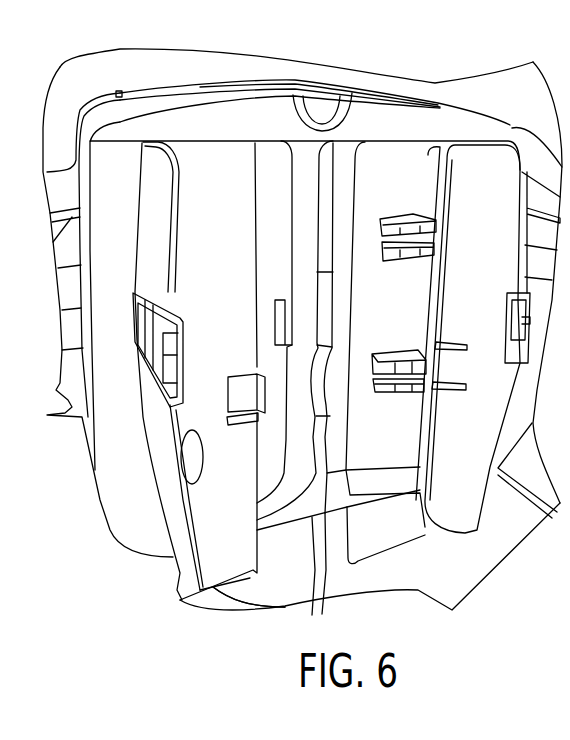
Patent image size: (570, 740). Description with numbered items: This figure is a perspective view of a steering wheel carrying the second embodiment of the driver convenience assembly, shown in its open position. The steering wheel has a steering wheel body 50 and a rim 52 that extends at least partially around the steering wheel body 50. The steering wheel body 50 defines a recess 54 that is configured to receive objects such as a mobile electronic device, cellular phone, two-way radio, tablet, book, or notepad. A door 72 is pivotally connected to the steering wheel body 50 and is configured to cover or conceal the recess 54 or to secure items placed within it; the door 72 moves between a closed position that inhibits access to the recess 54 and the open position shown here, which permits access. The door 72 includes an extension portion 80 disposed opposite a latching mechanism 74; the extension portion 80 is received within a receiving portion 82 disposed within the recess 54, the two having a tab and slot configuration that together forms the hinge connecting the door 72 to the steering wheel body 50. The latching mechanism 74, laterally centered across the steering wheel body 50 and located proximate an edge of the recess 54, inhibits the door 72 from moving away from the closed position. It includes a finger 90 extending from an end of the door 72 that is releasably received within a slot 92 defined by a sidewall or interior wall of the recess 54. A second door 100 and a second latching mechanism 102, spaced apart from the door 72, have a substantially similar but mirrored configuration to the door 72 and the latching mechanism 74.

The steering wheel body 50 is at (391, 112).
The rim 52 is at (498, 547).
The recess 54 is at (392, 163).
The door 72 is at (478, 167).
The latching mechanism 74 is at (447, 393).
The extension portion 80 is at (405, 258).
The receiving portion 82 is at (412, 220).
The finger 90 is at (445, 362).
The slot 92 is at (280, 303).
The second door 100 is at (189, 162).
The second latching mechanism 102 is at (237, 428).